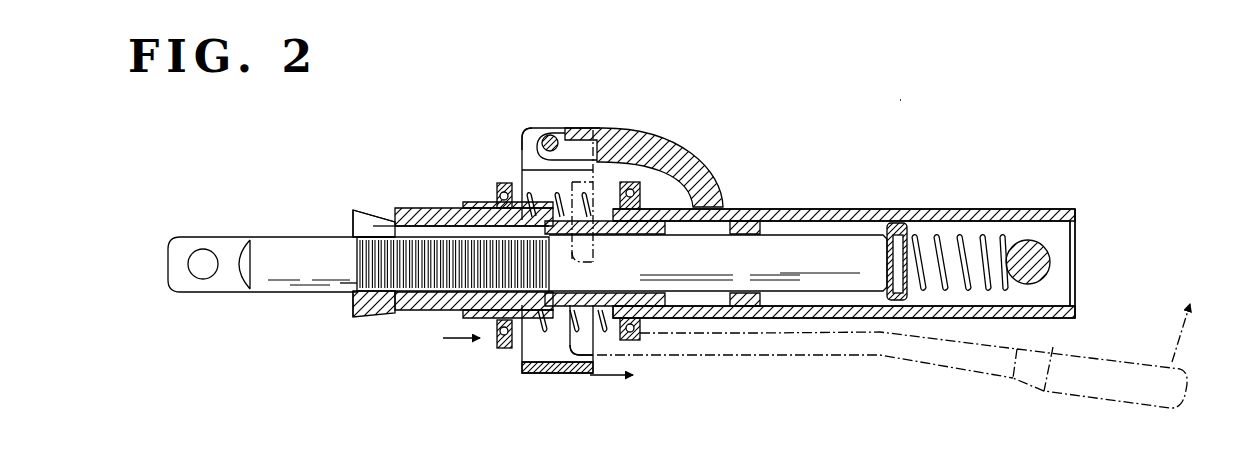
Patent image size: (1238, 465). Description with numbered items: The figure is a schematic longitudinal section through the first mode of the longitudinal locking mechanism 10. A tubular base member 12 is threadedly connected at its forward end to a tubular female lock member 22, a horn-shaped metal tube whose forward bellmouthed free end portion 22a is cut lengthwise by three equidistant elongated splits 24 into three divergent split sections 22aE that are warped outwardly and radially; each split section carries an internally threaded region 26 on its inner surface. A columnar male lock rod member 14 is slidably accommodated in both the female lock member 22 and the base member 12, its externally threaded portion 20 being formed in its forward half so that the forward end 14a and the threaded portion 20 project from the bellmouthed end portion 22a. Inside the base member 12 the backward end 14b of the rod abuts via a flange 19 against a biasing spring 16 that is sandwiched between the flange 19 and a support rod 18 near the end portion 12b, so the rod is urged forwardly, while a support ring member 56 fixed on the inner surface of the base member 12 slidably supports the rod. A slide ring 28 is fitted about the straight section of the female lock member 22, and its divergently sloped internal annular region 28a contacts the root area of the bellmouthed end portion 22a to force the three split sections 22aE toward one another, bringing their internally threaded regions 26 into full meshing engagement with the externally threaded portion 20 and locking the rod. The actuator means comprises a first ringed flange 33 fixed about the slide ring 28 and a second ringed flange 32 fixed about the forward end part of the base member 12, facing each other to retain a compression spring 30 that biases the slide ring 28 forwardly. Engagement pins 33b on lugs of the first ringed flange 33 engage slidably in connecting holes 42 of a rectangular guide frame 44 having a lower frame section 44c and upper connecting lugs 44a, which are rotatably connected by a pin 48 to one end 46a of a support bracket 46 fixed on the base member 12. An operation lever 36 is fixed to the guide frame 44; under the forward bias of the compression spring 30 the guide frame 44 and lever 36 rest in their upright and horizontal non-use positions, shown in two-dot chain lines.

The longitudinal locking mechanism 10 is at (905, 97).
The tubular base member 12 is at (844, 215).
The end portion of body 12b is at (1013, 207).
The male lock rod member 14 is at (262, 246).
The forward end 14a is at (203, 293).
The backward end 14b is at (853, 240).
The biasing spring 16 is at (958, 233).
The support rod 18 is at (1050, 255).
The flange 19 is at (897, 223).
The externally threaded portion 20 is at (368, 263).
The tubular female lock member 22 is at (352, 281).
The bellmouthed free end portion 22a is at (350, 191).
The divergent split sections 22aE is at (372, 210).
The elongated splits 24 is at (377, 220).
The internally threaded region 26 is at (357, 283).
The slide ring 28 is at (469, 247).
The divergently sloped internal annular region 28a is at (390, 315).
The compression spring 30 is at (540, 335).
The second ringed flange 32 is at (637, 340).
The first ringed flange 33 is at (500, 348).
The engagement pins 33b is at (575, 252).
The operation lever 36 is at (1083, 397).
The connecting holes 42 is at (560, 273).
The guide frame 44 is at (560, 258).
The upper connecting lugs 44a is at (522, 137).
The lower frame section 44c is at (582, 375).
The support bracket 46 is at (644, 130).
The one end of support bracket 46a is at (567, 130).
The pin 48 is at (553, 135).
The support ring member 56 is at (753, 218).